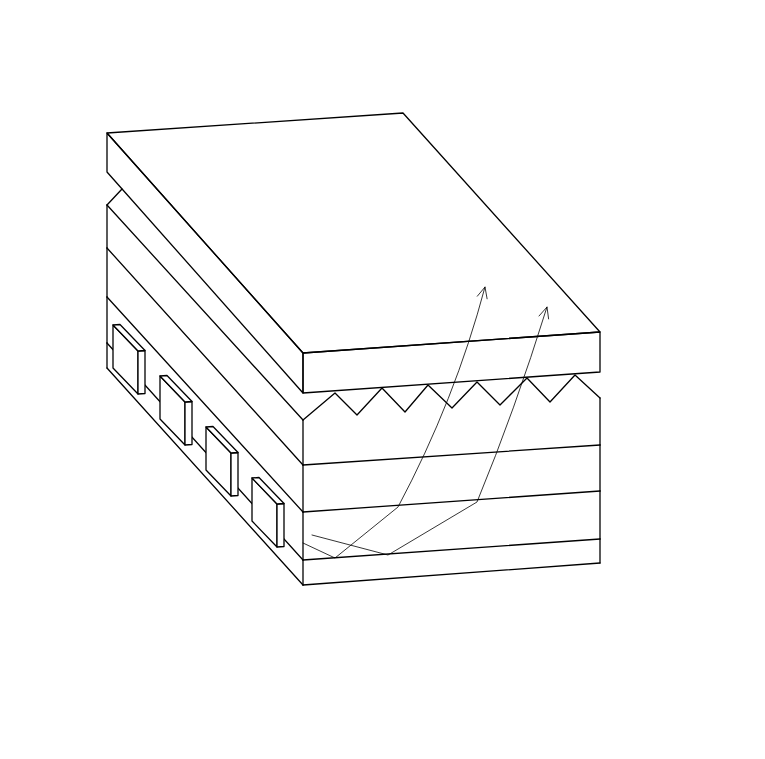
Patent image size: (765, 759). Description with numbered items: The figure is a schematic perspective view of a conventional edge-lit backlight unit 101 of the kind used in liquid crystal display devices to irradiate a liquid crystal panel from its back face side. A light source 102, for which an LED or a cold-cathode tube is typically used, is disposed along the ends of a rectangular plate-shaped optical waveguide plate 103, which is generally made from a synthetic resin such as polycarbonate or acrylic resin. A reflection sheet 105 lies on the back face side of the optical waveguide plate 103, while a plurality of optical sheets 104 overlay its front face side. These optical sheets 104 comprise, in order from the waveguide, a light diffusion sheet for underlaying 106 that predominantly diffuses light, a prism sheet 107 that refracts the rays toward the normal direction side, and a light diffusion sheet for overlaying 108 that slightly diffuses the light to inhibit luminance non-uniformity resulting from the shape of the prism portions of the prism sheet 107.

The edge-lit backlight unit 101 is at (622, 85).
The light source 102 is at (123, 359).
The optical waveguide plate 103 is at (582, 527).
The optical sheets 104 is at (638, 435).
The reflection sheet 105 is at (582, 555).
The light diffusion sheet for underlaying 106 is at (582, 478).
The prism sheet 107 is at (587, 420).
The light diffusion sheet for overlaying 108 is at (587, 353).